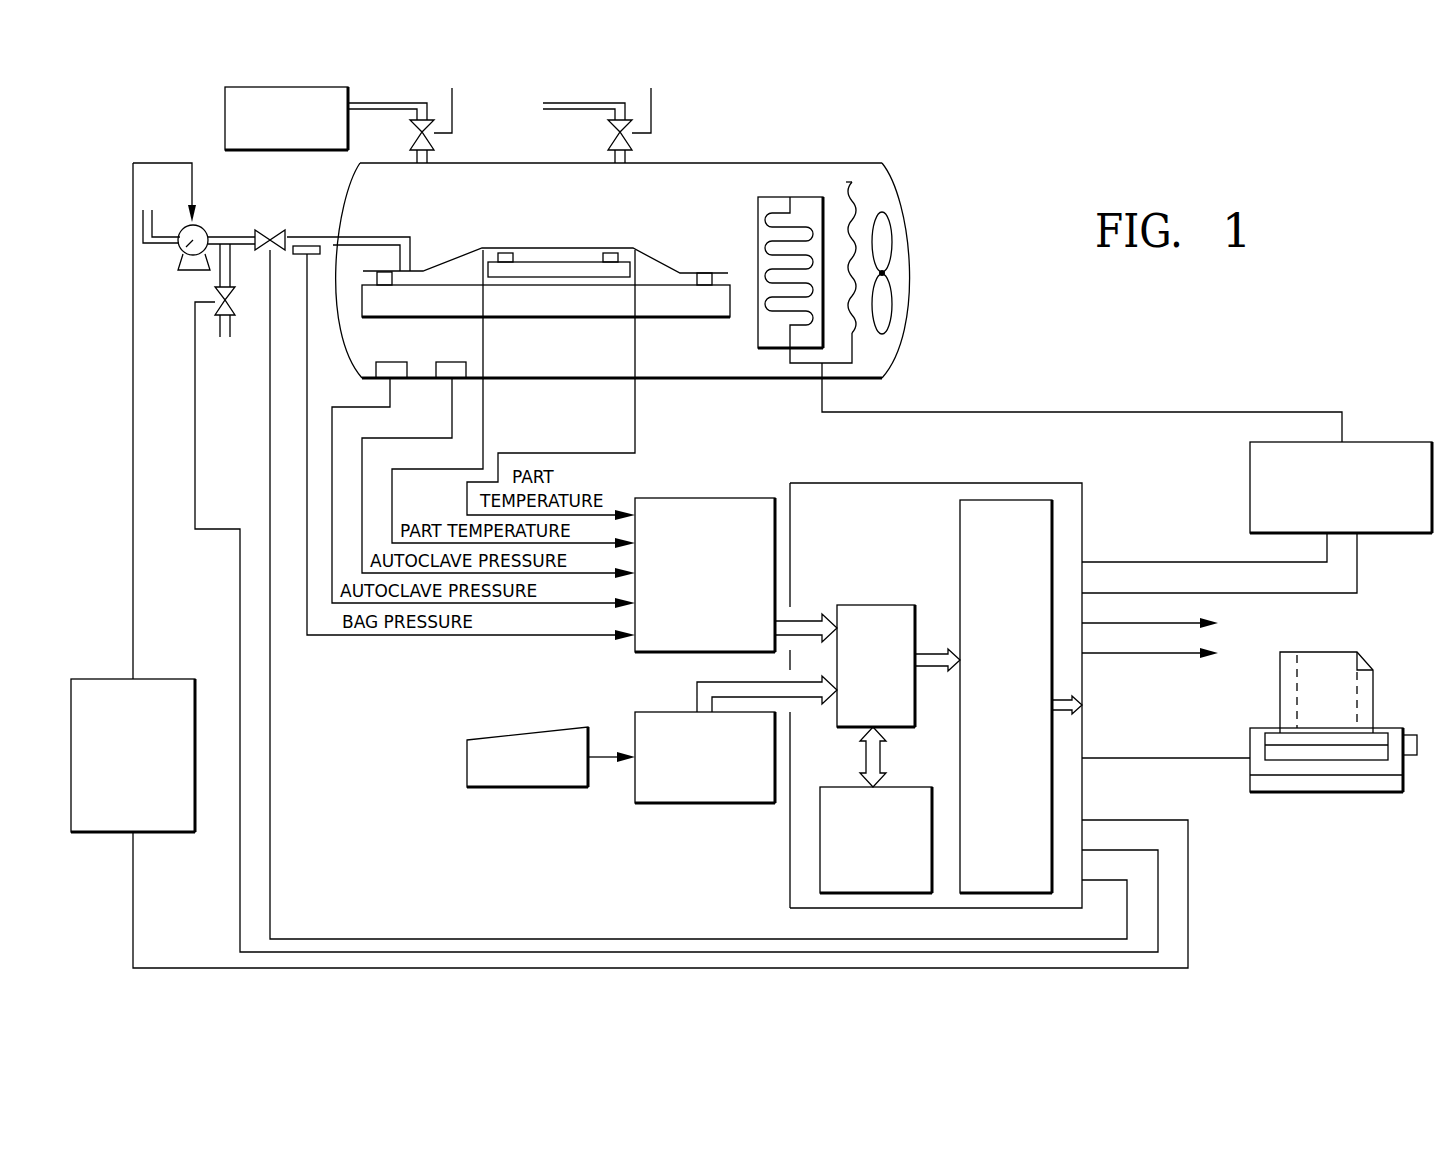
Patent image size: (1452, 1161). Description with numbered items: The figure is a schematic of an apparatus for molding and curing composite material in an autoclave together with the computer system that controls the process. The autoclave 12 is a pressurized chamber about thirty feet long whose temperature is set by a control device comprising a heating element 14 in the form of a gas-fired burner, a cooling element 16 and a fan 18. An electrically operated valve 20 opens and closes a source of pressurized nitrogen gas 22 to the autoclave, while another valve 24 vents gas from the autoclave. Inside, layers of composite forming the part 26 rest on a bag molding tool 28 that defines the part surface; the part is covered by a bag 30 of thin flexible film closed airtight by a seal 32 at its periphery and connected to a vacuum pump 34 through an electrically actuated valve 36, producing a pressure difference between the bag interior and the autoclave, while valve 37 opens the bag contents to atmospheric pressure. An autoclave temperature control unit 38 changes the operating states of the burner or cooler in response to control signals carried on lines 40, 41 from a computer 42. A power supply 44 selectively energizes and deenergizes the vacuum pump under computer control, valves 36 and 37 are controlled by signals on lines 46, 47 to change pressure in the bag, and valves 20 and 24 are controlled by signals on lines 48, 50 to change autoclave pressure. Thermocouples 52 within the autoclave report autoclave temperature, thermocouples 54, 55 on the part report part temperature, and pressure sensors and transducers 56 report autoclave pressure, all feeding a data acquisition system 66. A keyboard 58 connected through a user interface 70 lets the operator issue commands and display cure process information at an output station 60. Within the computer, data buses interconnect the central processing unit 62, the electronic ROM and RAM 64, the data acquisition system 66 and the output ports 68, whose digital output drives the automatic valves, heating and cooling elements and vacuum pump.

The autoclave 12 is at (766, 385).
The heating element 14 is at (758, 236).
The cooling element 16 is at (853, 188).
The fan 18 is at (895, 246).
The valve 20 is at (440, 137).
The source of pressurized nitrogen gas 22 is at (225, 117).
The valve 24 is at (612, 136).
The part 26 is at (548, 266).
The bag molding tool 28 is at (600, 303).
The bag 30 is at (456, 254).
The seal 32 is at (383, 271).
The vacuum pump 34 is at (188, 248).
The valve 36 is at (277, 230).
The valve 37 is at (235, 303).
The autoclave temperature control unit 38 is at (1383, 442).
The line 40 is at (1358, 562).
The line 41 is at (1215, 562).
The computer 42 is at (915, 483).
The power supply 44 is at (160, 679).
The line 46 is at (270, 824).
The line 47 is at (241, 771).
The line 48 is at (455, 116).
The line 50 is at (652, 119).
The thermocouples 52 is at (462, 362).
The thermocouple 54 is at (512, 252).
The thermocouple 55 is at (615, 252).
The pressure sensors and transducers 56 is at (393, 362).
The keyboard 58 is at (505, 790).
The output station 60 is at (1325, 783).
The central processing unit 62 is at (850, 605).
The electronic ROM and RAM 64 is at (905, 787).
The data acquisition system 66 is at (775, 522).
The output ports 68 is at (960, 573).
The user interface 70 is at (640, 712).